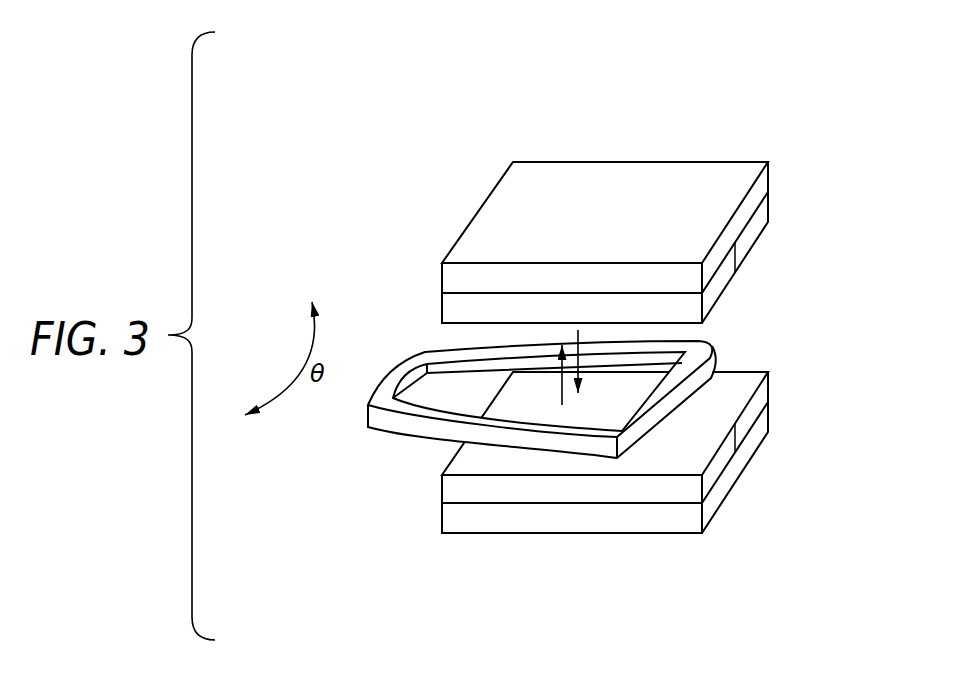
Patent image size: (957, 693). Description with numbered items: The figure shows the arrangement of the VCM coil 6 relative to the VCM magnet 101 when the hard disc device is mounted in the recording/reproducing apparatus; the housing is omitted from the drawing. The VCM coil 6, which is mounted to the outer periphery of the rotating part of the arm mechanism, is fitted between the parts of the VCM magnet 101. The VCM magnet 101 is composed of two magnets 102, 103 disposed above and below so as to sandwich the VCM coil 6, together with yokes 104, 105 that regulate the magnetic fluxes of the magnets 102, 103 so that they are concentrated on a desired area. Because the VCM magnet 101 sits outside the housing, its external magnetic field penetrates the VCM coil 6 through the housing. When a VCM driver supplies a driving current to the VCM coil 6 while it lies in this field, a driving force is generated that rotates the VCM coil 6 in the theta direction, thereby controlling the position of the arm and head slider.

The VCM magnet 101 is at (652, 337).
The magnet 102 is at (765, 393).
The magnet 103 is at (760, 210).
The yoke 104 is at (750, 453).
The yoke 105 is at (763, 184).
The VCM coil 6 is at (712, 337).